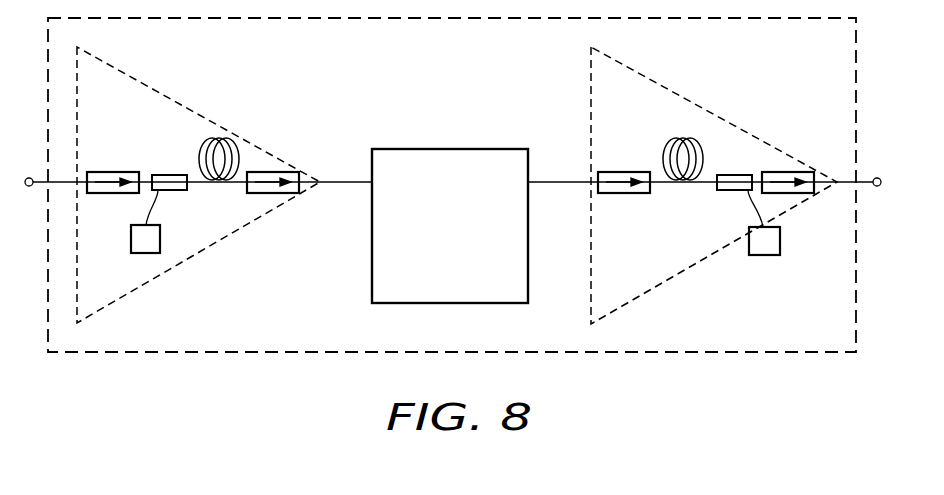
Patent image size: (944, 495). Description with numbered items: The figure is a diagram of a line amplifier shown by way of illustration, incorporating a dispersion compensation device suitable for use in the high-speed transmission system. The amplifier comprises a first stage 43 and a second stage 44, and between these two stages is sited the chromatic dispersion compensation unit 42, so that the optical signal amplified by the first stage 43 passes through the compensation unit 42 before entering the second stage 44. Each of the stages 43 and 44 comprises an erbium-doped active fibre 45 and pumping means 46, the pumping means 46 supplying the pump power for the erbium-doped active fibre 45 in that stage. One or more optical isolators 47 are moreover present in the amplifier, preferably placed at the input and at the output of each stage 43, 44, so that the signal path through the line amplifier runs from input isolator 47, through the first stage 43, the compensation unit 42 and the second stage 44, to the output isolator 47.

The chromatic dispersion compensation unit 42 is at (380, 270).
The first stage 43 is at (150, 98).
The second stage 44 is at (640, 270).
The erbium-doped active fibre 45 is at (222, 138).
The pumping means 46 is at (174, 212).
The optical isolator 47 is at (113, 172).